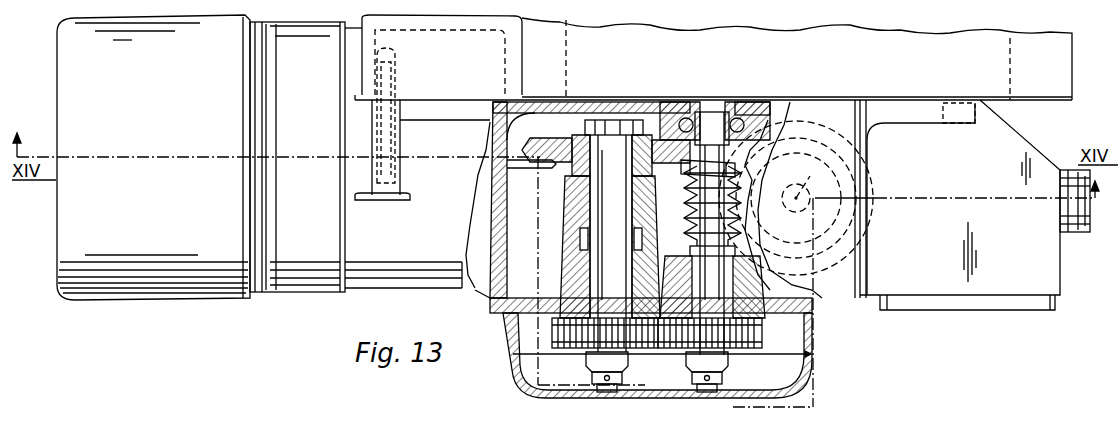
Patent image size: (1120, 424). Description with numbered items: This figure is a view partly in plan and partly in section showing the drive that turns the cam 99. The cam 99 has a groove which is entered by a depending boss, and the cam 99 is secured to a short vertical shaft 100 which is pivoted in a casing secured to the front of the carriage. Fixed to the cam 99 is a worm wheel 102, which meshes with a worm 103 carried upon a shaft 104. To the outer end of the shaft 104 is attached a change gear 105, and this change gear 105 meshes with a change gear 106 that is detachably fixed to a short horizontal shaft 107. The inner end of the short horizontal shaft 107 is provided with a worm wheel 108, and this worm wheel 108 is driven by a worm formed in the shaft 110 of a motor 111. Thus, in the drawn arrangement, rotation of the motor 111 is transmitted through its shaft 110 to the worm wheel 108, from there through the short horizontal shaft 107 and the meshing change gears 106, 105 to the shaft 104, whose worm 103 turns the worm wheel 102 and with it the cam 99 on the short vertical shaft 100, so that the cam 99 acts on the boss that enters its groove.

The cam 99 is at (777, 122).
The short vertical shaft 100 is at (858, 165).
The worm wheel 102 is at (770, 170).
The worm 103 is at (738, 178).
The shaft 104 is at (712, 140).
The change gear 105 is at (748, 350).
The change gear 106 is at (630, 349).
The short horizontal shaft 107 is at (592, 197).
The worm wheel 108 is at (560, 140).
The shaft of motor 110 is at (495, 183).
The motor 111 is at (488, 296).